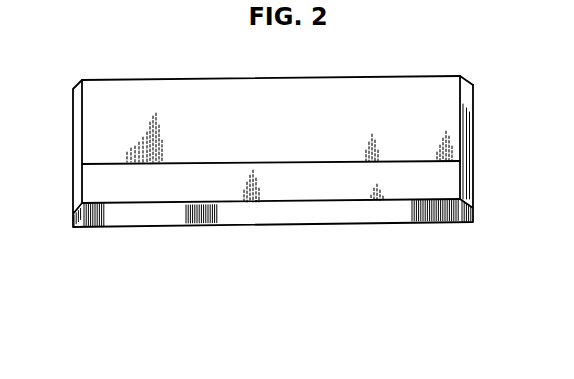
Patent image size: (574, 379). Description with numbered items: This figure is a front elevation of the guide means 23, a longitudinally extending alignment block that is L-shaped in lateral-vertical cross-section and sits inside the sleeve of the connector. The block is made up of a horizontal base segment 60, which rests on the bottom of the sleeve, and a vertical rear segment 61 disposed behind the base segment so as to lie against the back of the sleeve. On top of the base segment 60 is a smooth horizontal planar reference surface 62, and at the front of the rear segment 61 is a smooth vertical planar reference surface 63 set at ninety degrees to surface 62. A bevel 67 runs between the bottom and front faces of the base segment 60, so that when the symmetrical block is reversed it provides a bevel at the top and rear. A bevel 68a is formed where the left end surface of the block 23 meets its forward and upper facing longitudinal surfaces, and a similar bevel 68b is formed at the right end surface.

The guide means 23 is at (277, 130).
The horizontal base segment 60 is at (173, 188).
The vertical rear segment 61 is at (453, 108).
The horizontal planar reference surface 62 is at (198, 141).
The vertical planar reference surface 63 is at (212, 88).
The bevel 67 is at (333, 212).
The bevel 68a is at (77, 197).
The bevel 68b is at (465, 190).